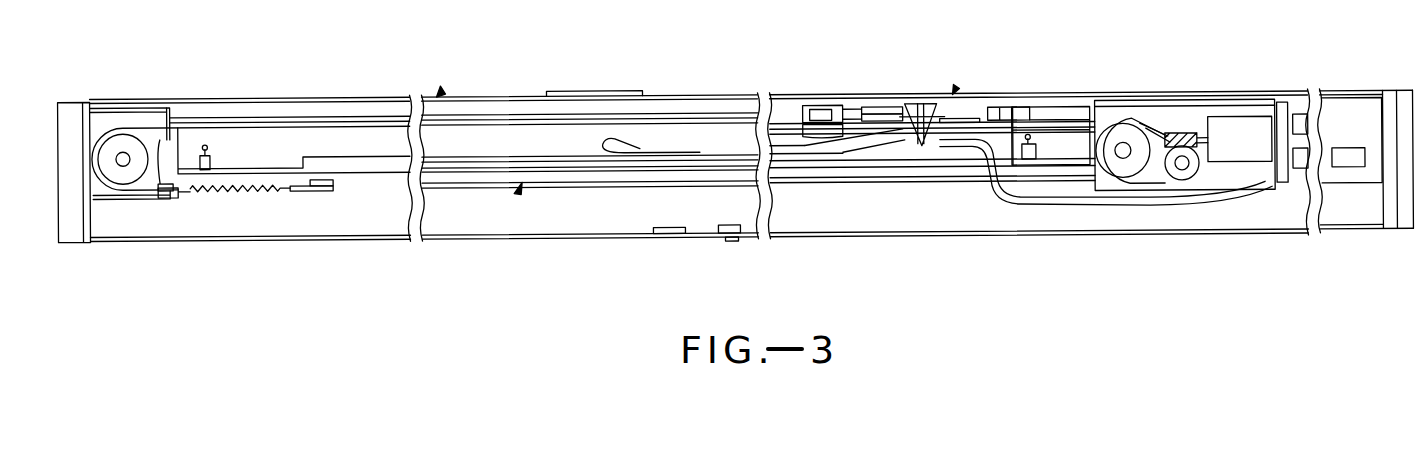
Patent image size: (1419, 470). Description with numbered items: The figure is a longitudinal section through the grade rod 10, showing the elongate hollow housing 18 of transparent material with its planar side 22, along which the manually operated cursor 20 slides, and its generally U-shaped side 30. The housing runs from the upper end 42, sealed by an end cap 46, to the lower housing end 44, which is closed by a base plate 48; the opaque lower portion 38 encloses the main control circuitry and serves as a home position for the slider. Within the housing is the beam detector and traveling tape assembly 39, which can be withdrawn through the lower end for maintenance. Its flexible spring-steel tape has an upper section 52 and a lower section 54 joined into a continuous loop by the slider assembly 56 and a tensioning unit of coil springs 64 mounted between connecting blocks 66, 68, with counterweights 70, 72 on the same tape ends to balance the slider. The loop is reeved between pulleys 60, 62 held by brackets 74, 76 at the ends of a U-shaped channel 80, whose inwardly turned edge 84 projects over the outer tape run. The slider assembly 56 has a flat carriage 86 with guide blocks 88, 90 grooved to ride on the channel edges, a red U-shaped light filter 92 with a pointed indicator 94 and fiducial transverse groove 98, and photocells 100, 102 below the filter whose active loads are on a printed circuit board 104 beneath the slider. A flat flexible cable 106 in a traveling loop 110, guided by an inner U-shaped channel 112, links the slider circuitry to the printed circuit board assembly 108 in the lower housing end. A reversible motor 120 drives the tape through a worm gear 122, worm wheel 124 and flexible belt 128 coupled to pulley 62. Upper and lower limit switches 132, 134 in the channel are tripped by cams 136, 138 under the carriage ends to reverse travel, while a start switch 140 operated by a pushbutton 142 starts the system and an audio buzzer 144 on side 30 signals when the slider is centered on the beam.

The grade rod 10 is at (1040, 62).
The elongate hollow housing 18 is at (441, 90).
The manually operated cursor 20 is at (622, 89).
The planar side 22 is at (253, 95).
The U-shaped side 30 is at (385, 237).
The lower portion of the housing 38 is at (1237, 240).
The beam detector and traveling tape assembly 39 is at (518, 188).
The housing upper end 42 is at (150, 237).
The lower housing end 44 is at (1370, 238).
The end cap 46 is at (66, 98).
The base plate 48 is at (1405, 94).
The upper section of the tape 52 is at (688, 120).
The lower section of the tape 54 is at (1050, 112).
The slider assembly 56 is at (955, 90).
The pulley 60 is at (135, 168).
The pulley 62 is at (1128, 166).
The coil springs 64 is at (243, 190).
The connecting block 66 is at (186, 192).
The connecting block 68 is at (305, 190).
The counterweight 70 is at (162, 172).
The counterweight 72 is at (325, 177).
The bracket 74 is at (120, 110).
The bracket 76 is at (1112, 104).
The U-shaped channel 80 is at (1068, 167).
The inwardly turned edge of the channel 84 is at (350, 114).
The carriage 86 is at (824, 108).
The guide block 88 is at (808, 118).
The guide block 90 is at (998, 108).
The light filter 92 is at (892, 106).
The pointed indicator 94 is at (934, 106).
The transverse groove 98 is at (925, 112).
The light detector 100 is at (855, 122).
The light detector 102 is at (962, 118).
The printed circuit board 104 is at (948, 150).
The flat flexible cable 106 is at (850, 126).
The printed circuit board assembly 108 is at (1337, 116).
The traveling loop 110 is at (602, 140).
The U-shaped channel 112 is at (472, 158).
The motor 120 is at (1248, 118).
The worm gear 122 is at (1186, 134).
The worm wheel 124 is at (1185, 175).
The flexible belt 128 is at (1150, 133).
The upper limit switch 132 is at (208, 154).
The lower limit switch 134 is at (1036, 152).
The cam 136 is at (828, 137).
The cam 138 is at (1013, 140).
The start switch 140 is at (730, 224).
The pushbutton 142 is at (730, 242).
The audio buzzer 144 is at (660, 226).